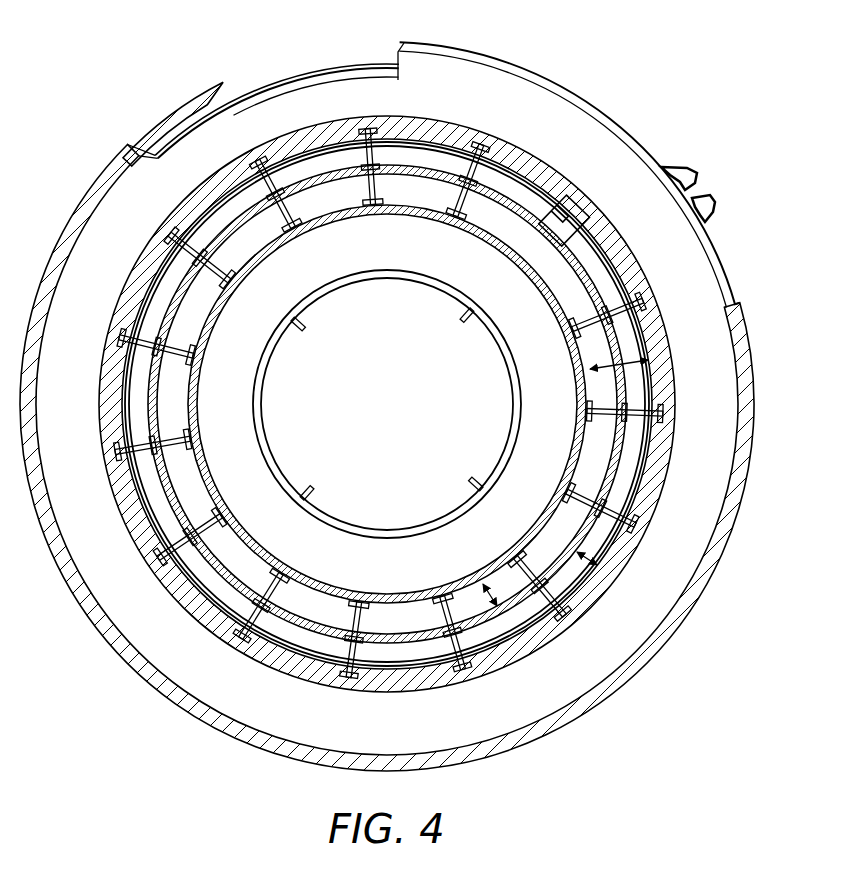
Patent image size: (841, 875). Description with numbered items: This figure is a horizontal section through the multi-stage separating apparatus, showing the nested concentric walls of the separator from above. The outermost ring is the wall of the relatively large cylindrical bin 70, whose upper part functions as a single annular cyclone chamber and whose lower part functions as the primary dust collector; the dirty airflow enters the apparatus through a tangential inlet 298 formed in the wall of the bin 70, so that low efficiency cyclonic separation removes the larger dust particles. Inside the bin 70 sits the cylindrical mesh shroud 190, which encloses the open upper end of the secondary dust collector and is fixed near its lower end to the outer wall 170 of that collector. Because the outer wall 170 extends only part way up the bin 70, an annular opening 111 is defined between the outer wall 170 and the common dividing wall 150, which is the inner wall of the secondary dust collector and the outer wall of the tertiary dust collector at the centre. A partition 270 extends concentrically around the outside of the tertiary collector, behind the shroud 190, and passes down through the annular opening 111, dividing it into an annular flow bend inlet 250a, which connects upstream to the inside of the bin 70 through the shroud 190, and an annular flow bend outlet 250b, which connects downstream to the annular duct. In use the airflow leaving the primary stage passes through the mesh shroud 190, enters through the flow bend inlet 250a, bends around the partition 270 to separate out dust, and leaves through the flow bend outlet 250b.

The bin 70 is at (673, 628).
The tangential inlet 298 is at (313, 70).
The mesh shroud 190 is at (437, 118).
The common dividing wall 150 is at (530, 157).
The partition 270 is at (633, 337).
The outer wall of the secondary dust collector 170 is at (650, 377).
The annular opening 111 is at (607, 372).
The flow bend inlet 250a is at (567, 553).
The flow bend outlet 250b is at (468, 584).